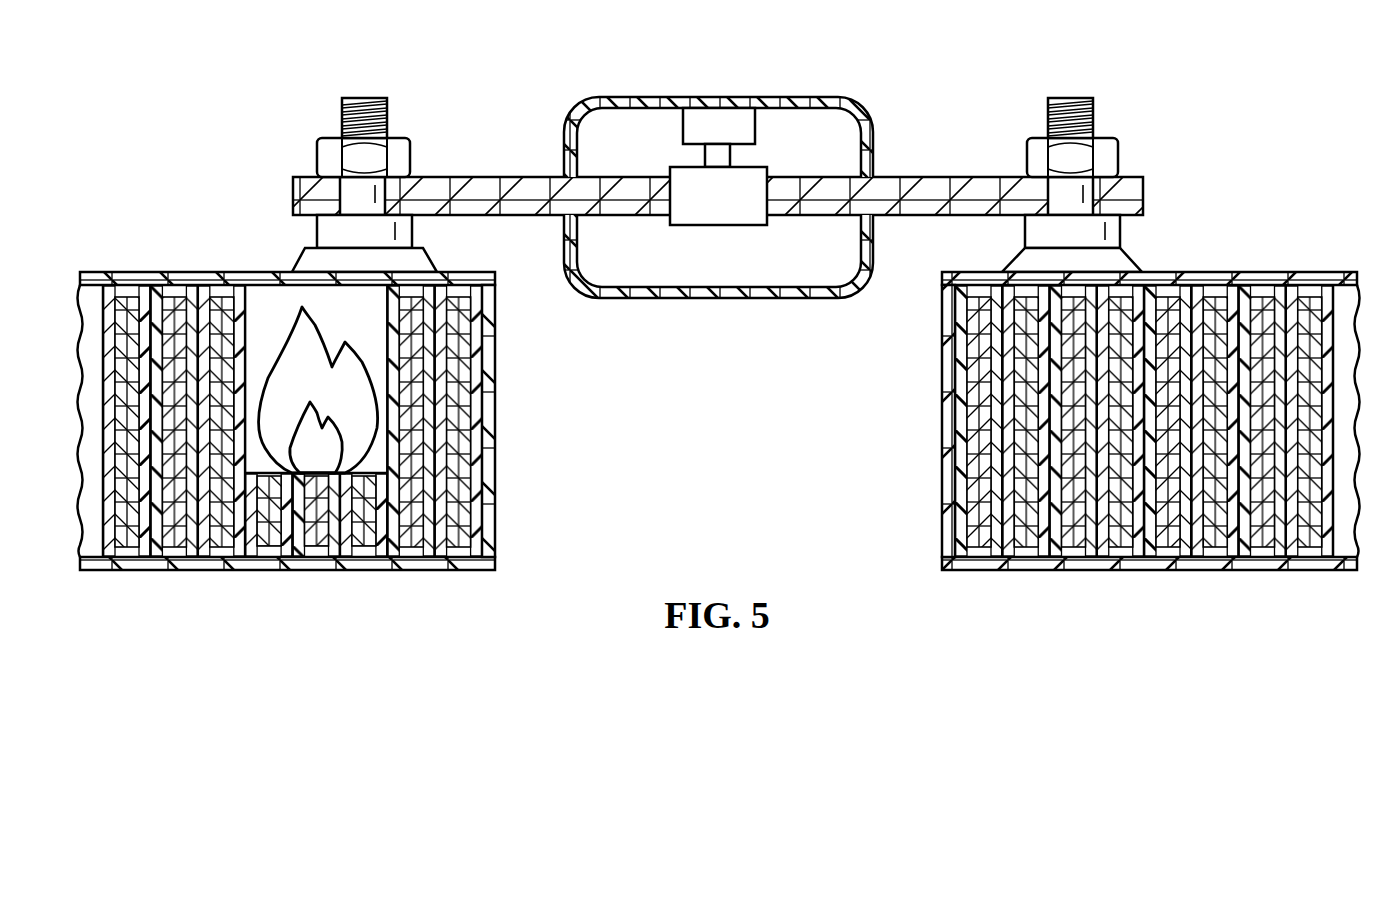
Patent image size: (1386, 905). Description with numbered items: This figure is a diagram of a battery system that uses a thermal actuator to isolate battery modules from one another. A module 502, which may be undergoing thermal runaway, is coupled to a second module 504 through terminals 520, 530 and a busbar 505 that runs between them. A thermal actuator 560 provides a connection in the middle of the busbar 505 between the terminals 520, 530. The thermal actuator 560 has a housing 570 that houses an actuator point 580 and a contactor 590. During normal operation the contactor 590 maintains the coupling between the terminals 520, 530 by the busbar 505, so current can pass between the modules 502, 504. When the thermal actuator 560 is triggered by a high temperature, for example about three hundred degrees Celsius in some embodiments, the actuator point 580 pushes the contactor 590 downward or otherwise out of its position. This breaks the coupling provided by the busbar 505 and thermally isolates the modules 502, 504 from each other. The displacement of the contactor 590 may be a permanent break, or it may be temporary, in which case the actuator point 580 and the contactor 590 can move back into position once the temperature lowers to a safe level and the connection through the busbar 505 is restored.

The module 502 is at (180, 236).
The module 504 is at (1256, 236).
The busbar 505 is at (487, 177).
The terminal 520 is at (363, 98).
The terminal 530 is at (1074, 98).
The thermal actuator 560 is at (718, 153).
The housing 570 is at (723, 97).
The actuator point 580 is at (683, 125).
The contactor 590 is at (715, 227).